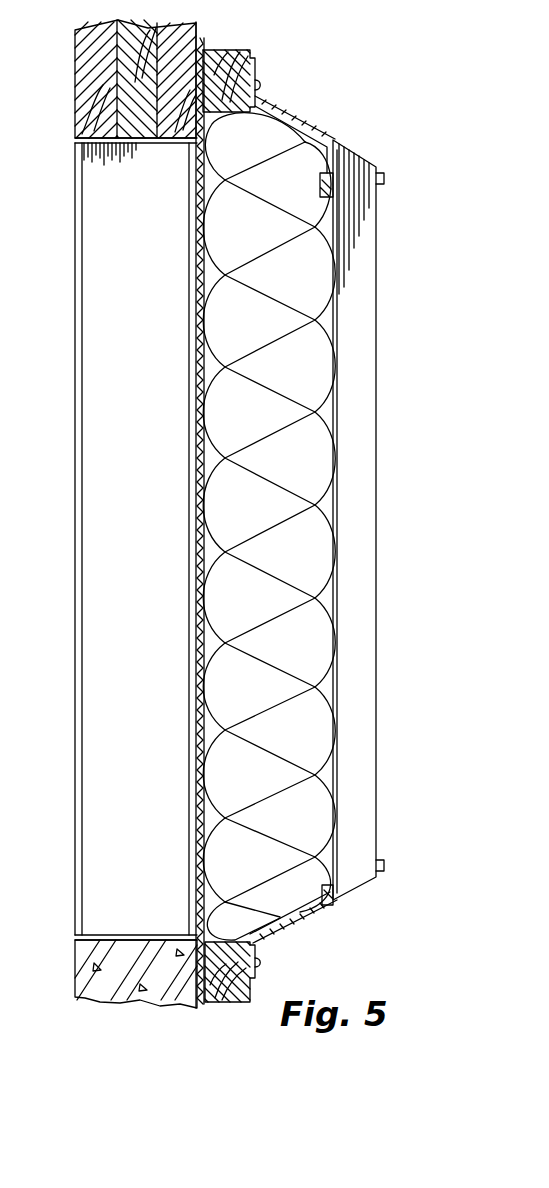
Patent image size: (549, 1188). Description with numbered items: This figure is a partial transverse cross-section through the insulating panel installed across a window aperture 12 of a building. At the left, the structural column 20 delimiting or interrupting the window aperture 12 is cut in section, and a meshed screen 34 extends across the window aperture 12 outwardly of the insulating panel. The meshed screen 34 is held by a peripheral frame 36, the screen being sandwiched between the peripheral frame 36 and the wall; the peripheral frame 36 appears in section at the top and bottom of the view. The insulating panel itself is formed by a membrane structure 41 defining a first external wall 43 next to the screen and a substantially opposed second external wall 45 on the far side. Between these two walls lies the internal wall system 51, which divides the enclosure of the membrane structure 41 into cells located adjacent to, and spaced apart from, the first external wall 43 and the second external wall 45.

The window aperture 12 is at (94, 760).
The column 20 is at (100, 460).
The meshed screen 34 is at (192, 325).
The peripheral frame 36 is at (222, 52).
The membrane structure 41 is at (215, 445).
The first external wall 43 is at (205, 372).
The second external wall 45 is at (333, 327).
The internal wall system 51 is at (262, 258).